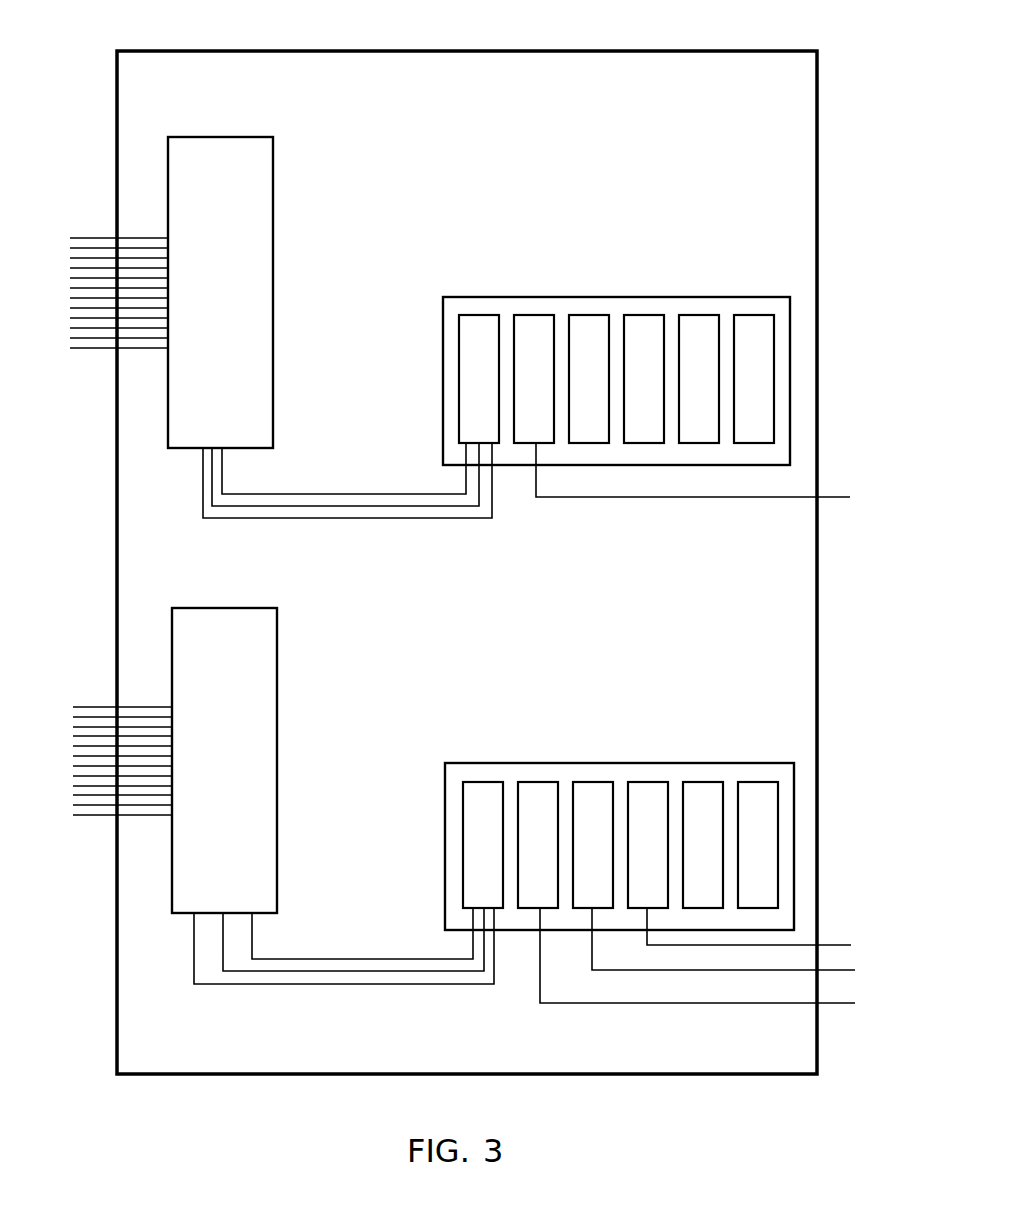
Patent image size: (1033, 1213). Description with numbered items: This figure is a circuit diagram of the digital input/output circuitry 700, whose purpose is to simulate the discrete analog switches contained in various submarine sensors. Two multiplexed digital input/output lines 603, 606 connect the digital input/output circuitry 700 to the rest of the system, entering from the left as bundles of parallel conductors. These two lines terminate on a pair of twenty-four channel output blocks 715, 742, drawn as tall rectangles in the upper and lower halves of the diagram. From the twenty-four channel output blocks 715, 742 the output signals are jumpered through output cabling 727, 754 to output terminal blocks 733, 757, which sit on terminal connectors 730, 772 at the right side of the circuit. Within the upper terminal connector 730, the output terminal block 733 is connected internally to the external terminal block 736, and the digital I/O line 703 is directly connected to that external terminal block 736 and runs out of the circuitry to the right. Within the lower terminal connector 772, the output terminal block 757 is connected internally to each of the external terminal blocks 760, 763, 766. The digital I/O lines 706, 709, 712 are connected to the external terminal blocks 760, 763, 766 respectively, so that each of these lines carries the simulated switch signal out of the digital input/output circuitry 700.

The digital input/output circuitry 700 is at (185, 50).
The 24 channel output block 715 is at (215, 137).
The multiplexed digital input/output line 603 is at (102, 237).
The output cabling 727 is at (357, 493).
The terminal connector 730 is at (732, 297).
The output terminal block 733 is at (479, 379).
The external terminal block 736 is at (534, 379).
The digital I/O line 703 is at (716, 475).
The 24 channel output block 742 is at (218, 607).
The multiplexed digital input/output line 606 is at (100, 707).
The output cabling 754 is at (360, 958).
The terminal connector 772 is at (737, 763).
The output terminal block 757 is at (483, 845).
The external terminal block 760 is at (538, 845).
The external terminal block 763 is at (593, 845).
The external terminal block 766 is at (648, 845).
The digital I/O line 712 is at (771, 932).
The digital I/O line 709 is at (744, 945).
The digital I/O line 706 is at (718, 961).